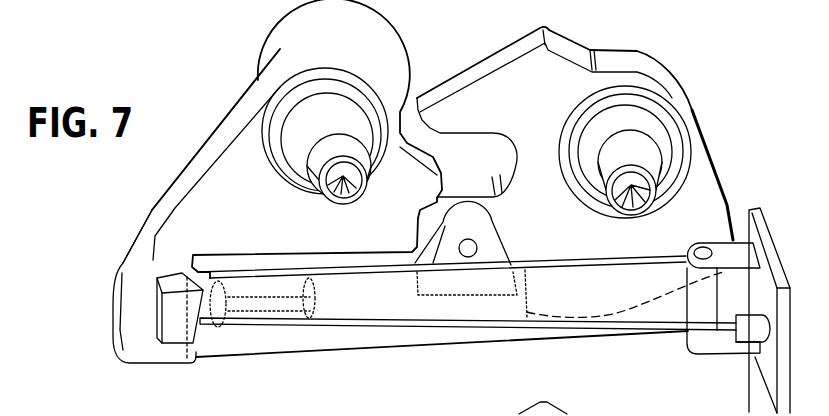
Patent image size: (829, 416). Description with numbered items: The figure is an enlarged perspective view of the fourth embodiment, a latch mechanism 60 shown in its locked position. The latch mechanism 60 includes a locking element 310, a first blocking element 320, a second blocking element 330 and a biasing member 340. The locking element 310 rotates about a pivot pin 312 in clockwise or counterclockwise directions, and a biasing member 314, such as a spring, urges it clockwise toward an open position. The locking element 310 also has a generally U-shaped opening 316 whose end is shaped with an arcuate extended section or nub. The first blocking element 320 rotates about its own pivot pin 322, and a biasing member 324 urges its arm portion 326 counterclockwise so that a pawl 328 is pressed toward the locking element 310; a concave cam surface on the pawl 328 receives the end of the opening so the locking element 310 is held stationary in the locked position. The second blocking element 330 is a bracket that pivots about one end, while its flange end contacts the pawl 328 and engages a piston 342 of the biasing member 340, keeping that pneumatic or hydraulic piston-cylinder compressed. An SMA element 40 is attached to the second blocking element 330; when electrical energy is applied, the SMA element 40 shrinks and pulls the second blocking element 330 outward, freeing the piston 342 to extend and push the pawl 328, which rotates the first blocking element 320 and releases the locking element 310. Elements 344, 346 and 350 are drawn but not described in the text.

The latch mechanism 60 is at (218, 77).
The locking element 310 is at (700, 110).
The pivot pin 312 is at (637, 207).
The biasing member 314 is at (675, 135).
The generally U-shaped opening 316 is at (473, 150).
The first blocking element 320 is at (208, 142).
The pivot pin 322 is at (360, 193).
The biasing member 324 is at (302, 172).
The arm portion 326 is at (153, 258).
The pawl 328 is at (172, 342).
The second blocking element 330 is at (478, 348).
The biasing member 340 is at (340, 325).
The piston 342 is at (221, 330).
The actuator bracket 344 is at (463, 300).
The pivot lug 346 is at (477, 247).
The mounting bracket 350 is at (780, 270).
The SMA element 40 is at (640, 334).